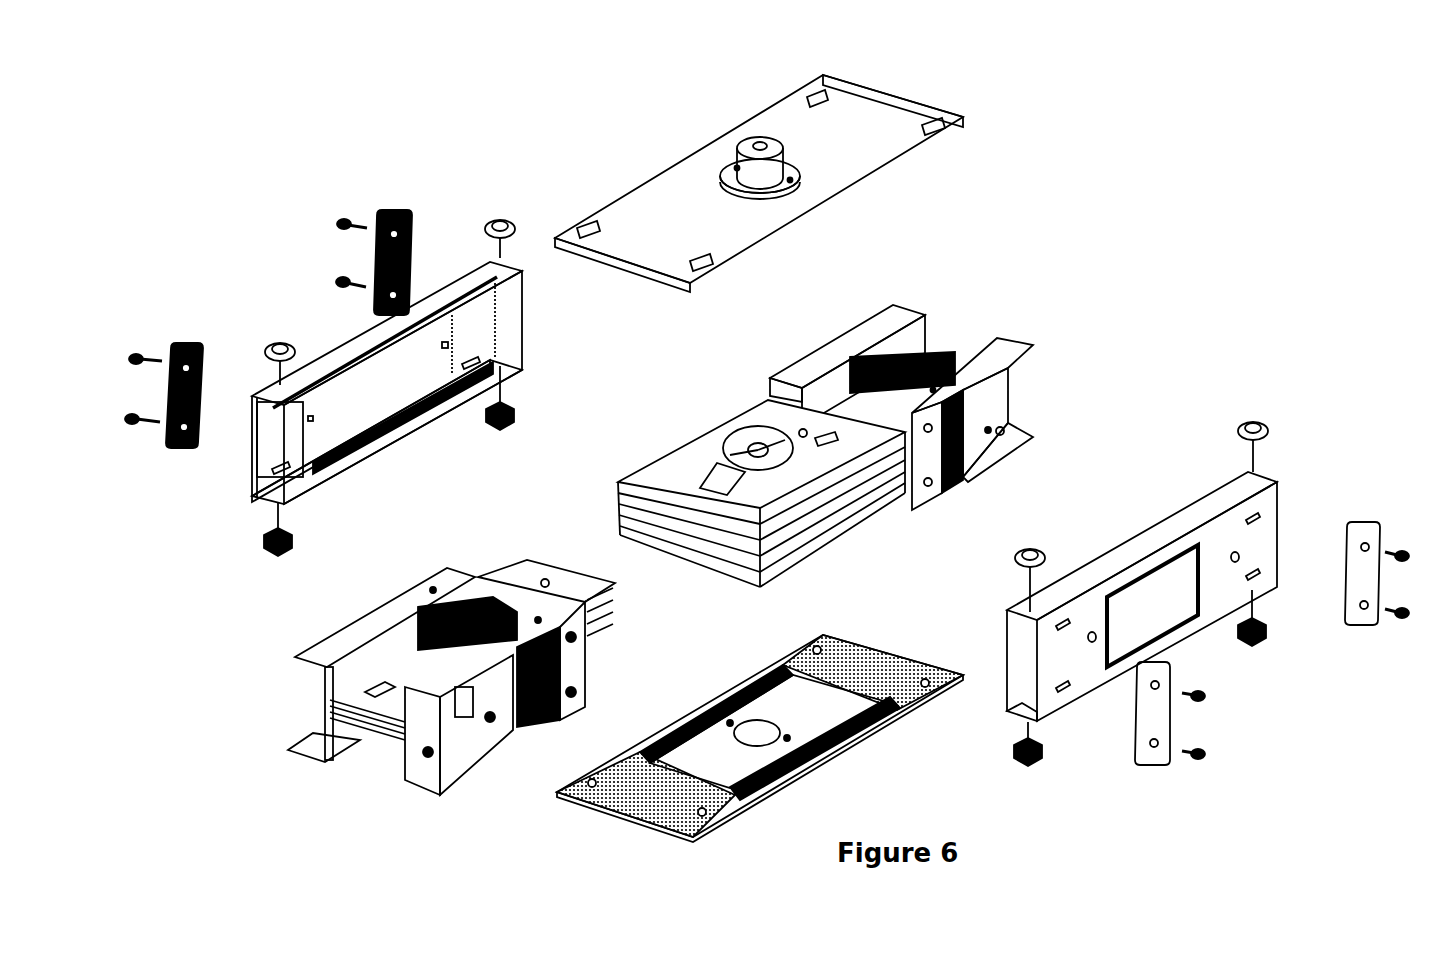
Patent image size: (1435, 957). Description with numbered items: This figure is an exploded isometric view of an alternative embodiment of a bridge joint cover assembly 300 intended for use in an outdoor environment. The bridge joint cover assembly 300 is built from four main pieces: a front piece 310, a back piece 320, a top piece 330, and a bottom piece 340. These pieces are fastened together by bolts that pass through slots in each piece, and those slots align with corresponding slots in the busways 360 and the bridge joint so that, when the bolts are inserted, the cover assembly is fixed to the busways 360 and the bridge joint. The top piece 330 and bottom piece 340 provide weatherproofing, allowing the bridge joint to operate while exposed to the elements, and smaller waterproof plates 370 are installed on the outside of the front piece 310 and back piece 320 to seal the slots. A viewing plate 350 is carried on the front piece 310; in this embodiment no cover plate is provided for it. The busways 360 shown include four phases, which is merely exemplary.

The bridge joint cover assembly 300 is at (1109, 168).
The front piece 310 is at (1165, 512).
The back piece 320 is at (386, 387).
The top piece 330 is at (687, 205).
The bottom piece 340 is at (726, 760).
The viewing plate 350 is at (1172, 624).
The busways 360 is at (1021, 419).
The waterproof plates 370 is at (767, 492).